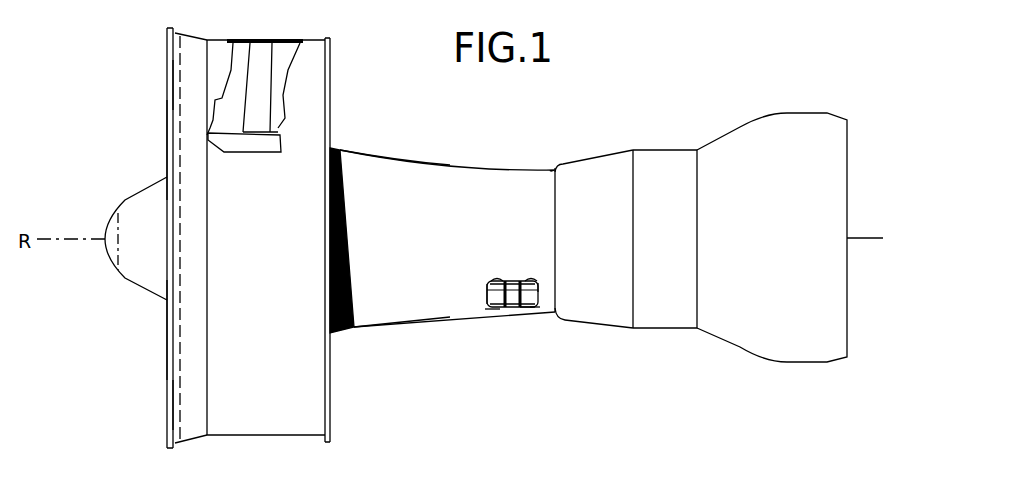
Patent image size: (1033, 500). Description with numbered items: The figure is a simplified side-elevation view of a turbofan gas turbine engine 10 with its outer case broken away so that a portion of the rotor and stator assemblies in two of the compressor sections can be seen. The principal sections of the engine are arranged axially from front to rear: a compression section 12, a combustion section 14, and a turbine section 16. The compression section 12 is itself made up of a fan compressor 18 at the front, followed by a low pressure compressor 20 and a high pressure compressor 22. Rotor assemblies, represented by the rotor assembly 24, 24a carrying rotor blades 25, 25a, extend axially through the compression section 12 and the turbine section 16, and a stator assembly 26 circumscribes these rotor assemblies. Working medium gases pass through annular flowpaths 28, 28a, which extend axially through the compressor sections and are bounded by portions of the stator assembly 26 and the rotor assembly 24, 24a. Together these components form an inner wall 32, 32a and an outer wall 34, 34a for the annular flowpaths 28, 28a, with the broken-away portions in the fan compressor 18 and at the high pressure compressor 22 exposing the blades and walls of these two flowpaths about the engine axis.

The turbofan gas turbine engine 10 is at (631, 118).
The compression section 12 is at (451, 255).
The combustion section 14 is at (609, 253).
The turbine section 16 is at (724, 255).
The fan compressor 18 is at (276, 250).
The low pressure compressor 20 is at (407, 309).
The high pressure compressor 22 is at (522, 273).
The rotor assembly 24 is at (478, 306).
The rotor assembly 24a is at (286, 121).
The rotor blades 25 is at (487, 292).
The rotor blades 25a is at (262, 52).
The stator assembly 26 is at (521, 314).
The annular flowpath 28 is at (160, 152).
The annular flowpath 28a is at (160, 81).
The inner wall 32 is at (538, 290).
The inner wall 32a is at (229, 135).
The outer wall 34 is at (538, 302).
The outer wall 34a is at (286, 48).